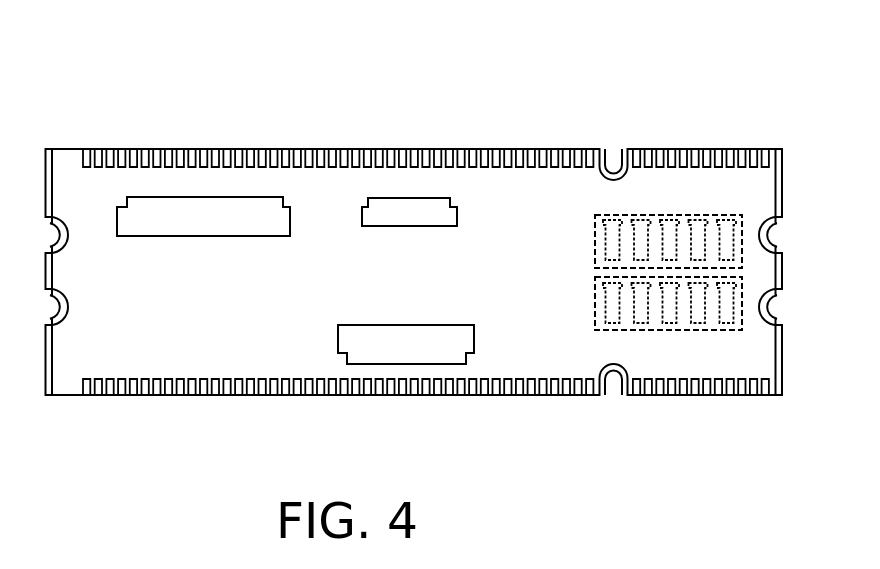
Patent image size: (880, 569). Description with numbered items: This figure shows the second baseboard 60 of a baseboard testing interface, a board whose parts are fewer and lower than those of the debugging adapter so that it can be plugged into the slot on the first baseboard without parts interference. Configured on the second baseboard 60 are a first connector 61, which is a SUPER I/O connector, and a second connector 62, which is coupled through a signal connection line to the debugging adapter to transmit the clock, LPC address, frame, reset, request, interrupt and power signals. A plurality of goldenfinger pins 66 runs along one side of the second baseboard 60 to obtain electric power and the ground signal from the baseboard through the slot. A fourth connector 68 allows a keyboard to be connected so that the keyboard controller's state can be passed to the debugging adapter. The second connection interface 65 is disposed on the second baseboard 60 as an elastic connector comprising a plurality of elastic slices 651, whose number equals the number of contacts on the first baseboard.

The second baseboard 60 is at (560, 134).
The first connector 61 is at (201, 213).
The second connector 62 is at (426, 343).
The second connection interface 65 is at (738, 229).
The elastic slices 651 is at (698, 228).
The goldenfinger pins 66 is at (483, 150).
The fourth connector 68 is at (411, 205).